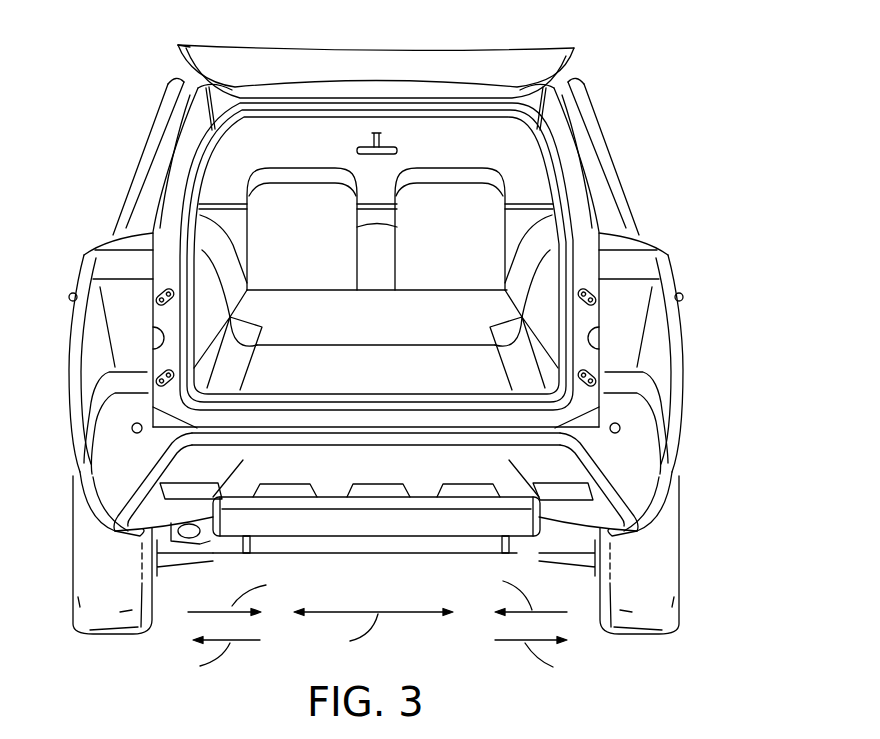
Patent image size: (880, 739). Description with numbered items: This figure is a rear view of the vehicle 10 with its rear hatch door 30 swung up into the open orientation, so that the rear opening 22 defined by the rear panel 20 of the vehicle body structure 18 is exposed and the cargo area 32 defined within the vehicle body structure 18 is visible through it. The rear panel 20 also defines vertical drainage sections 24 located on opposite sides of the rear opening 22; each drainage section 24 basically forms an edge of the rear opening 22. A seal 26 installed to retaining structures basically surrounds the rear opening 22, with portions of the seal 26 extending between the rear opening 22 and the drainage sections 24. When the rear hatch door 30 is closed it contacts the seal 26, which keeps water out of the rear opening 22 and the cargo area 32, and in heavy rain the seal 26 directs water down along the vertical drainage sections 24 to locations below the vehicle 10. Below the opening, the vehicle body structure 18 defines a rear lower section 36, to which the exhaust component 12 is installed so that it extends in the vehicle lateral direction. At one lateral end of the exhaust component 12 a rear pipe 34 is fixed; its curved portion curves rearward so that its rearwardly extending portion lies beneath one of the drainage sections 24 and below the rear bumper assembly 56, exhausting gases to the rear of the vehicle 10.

The vehicle 10 is at (392, 348).
The exhaust component 12 is at (350, 543).
The vehicle body structure 18 is at (136, 155).
The rear panel 20 is at (128, 310).
The rear opening 22 is at (152, 356).
The vertical drainage section 24 is at (167, 265).
The seal 26 is at (192, 196).
The rear hatch door 30 is at (494, 72).
The cargo area 32 is at (460, 310).
The rear pipe 34 is at (212, 545).
The rear lower section 36 is at (168, 538).
The rear bumper assembly 56 is at (418, 468).